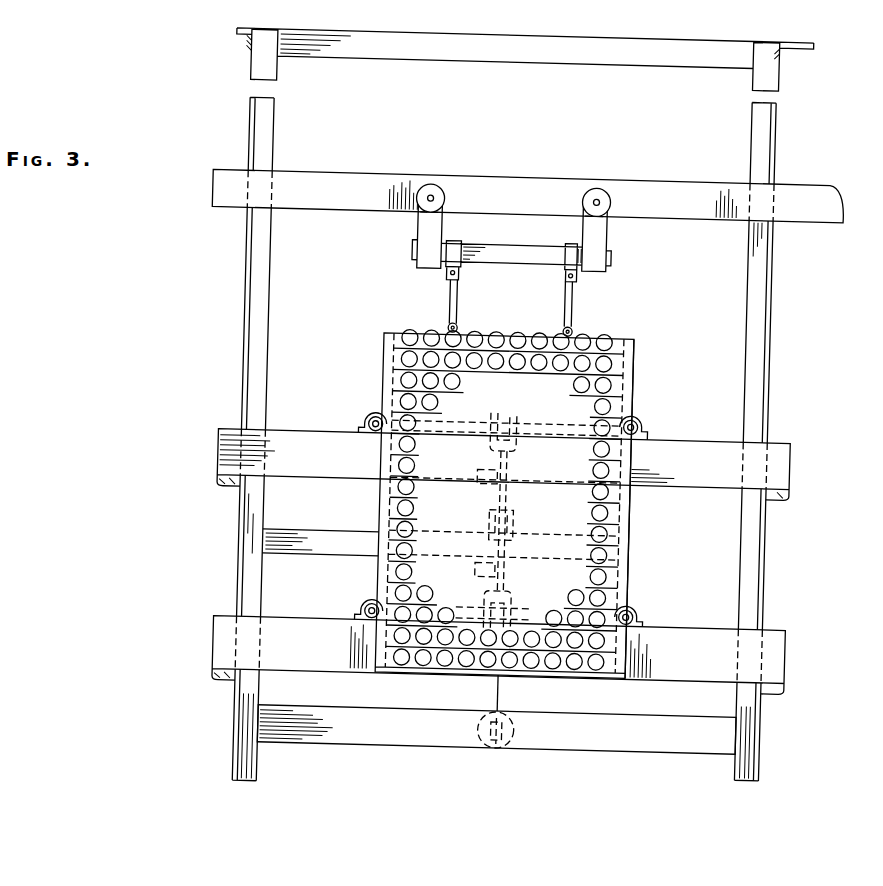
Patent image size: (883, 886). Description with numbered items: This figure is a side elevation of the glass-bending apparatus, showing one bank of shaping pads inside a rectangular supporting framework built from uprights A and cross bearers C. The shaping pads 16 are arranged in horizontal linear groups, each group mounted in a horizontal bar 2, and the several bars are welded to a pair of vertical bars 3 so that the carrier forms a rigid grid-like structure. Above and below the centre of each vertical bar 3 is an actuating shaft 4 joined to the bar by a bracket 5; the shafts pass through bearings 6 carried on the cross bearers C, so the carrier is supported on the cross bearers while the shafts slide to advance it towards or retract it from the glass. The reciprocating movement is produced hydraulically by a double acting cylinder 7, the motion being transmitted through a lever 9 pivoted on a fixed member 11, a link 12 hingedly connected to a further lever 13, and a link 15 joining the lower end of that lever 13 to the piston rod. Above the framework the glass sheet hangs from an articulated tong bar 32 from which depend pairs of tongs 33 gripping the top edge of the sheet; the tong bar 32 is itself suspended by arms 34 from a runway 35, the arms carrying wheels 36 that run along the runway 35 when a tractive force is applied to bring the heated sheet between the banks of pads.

The horizontal bar 2 is at (611, 339).
The vertical bar 3 is at (633, 360).
The actuating shaft 4 is at (366, 423).
The bracket 5 is at (379, 414).
The bearing 6 is at (503, 465).
The double acting cylinder 7 is at (525, 730).
The lever 9 is at (513, 416).
The fixed member 11 is at (480, 467).
The link 12 is at (491, 519).
The lever 13 is at (505, 550).
The link 15 is at (490, 730).
The shaping pad 16 is at (479, 332).
The tong bar 32 is at (495, 265).
The tongs 33 is at (444, 307).
The arm 34 is at (602, 237).
The runway 35 is at (358, 214).
The wheel 36 is at (439, 202).
The upright A is at (273, 304).
The cross bearer C is at (228, 165).